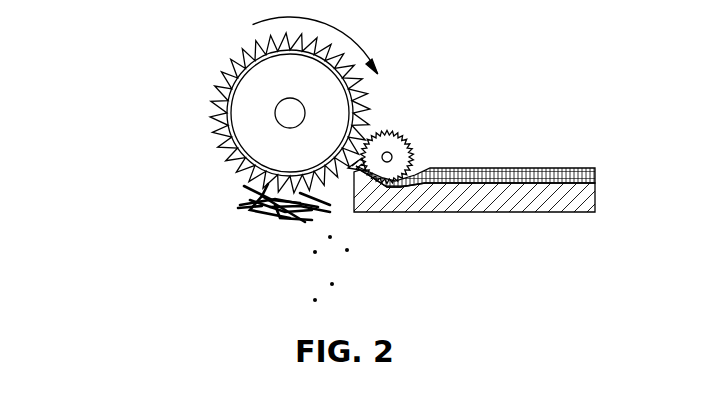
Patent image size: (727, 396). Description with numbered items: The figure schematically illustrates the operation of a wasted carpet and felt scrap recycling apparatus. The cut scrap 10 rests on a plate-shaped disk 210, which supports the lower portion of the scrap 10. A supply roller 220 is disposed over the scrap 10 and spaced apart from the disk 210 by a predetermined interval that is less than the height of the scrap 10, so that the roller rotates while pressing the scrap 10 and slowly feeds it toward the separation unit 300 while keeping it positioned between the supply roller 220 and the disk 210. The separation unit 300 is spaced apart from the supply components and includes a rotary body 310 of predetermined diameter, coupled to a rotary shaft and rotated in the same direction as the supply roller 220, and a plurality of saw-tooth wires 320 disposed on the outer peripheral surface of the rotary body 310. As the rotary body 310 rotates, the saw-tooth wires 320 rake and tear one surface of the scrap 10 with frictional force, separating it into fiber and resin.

The scrap 10 is at (546, 172).
The disk 210 is at (487, 200).
The supply roller 220 is at (397, 130).
The separation unit 300 is at (221, 113).
The rotary body 310 is at (215, 95).
The saw-tooth wire 320 is at (225, 143).